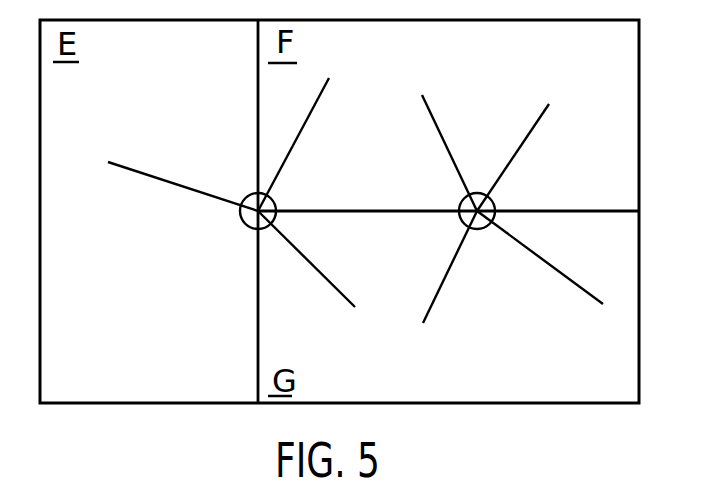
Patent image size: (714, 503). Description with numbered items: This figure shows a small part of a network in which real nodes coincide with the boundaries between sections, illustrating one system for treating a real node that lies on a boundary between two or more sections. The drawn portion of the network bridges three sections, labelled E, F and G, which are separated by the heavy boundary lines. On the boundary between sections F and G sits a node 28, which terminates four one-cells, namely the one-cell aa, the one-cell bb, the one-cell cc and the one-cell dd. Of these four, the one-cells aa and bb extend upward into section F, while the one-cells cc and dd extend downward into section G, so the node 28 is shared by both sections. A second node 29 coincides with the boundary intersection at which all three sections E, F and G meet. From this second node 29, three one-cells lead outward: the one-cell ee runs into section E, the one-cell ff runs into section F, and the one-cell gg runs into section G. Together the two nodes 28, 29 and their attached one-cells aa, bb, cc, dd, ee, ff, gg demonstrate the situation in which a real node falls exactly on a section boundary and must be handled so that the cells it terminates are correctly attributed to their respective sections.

The node 28 is at (490, 197).
The second node 29 is at (278, 199).
The 1-cell aa is at (449, 153).
The 1-cell bb is at (518, 157).
The 1-cell cc is at (540, 257).
The 1-cell dd is at (450, 267).
The 1-cell ee is at (183, 178).
The 1-cell ff is at (293, 144).
The 1-cell gg is at (310, 259).